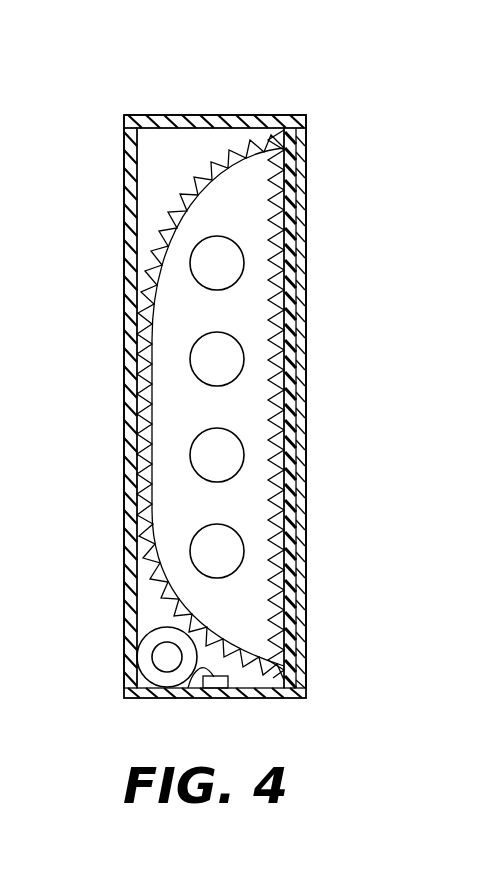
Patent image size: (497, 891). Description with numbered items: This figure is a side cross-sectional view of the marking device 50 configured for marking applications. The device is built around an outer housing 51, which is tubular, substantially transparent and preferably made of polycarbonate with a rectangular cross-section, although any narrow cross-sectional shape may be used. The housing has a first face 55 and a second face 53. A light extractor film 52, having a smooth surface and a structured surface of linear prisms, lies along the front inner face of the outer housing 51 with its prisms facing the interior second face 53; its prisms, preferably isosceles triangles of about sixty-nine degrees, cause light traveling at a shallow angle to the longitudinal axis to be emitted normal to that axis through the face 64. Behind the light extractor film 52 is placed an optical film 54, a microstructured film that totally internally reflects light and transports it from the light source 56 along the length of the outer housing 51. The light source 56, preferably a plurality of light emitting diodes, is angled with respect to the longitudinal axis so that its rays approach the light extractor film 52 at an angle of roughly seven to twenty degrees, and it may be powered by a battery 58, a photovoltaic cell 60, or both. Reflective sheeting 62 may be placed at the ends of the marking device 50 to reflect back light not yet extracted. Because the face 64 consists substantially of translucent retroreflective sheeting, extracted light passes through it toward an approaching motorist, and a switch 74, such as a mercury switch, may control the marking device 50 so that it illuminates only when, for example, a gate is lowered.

The marking device 50 is at (177, 93).
The outer housing 51 is at (134, 127).
The light extractor film 52 is at (273, 497).
The second face 53 is at (153, 222).
The optical film 54 is at (138, 366).
The first face 55 is at (140, 262).
The light source 56 is at (200, 270).
The battery 58 is at (157, 652).
The photovoltaic cell 60 is at (170, 130).
The reflective sheeting 62 is at (175, 432).
The face 64 is at (305, 273).
The switch 74 is at (190, 687).